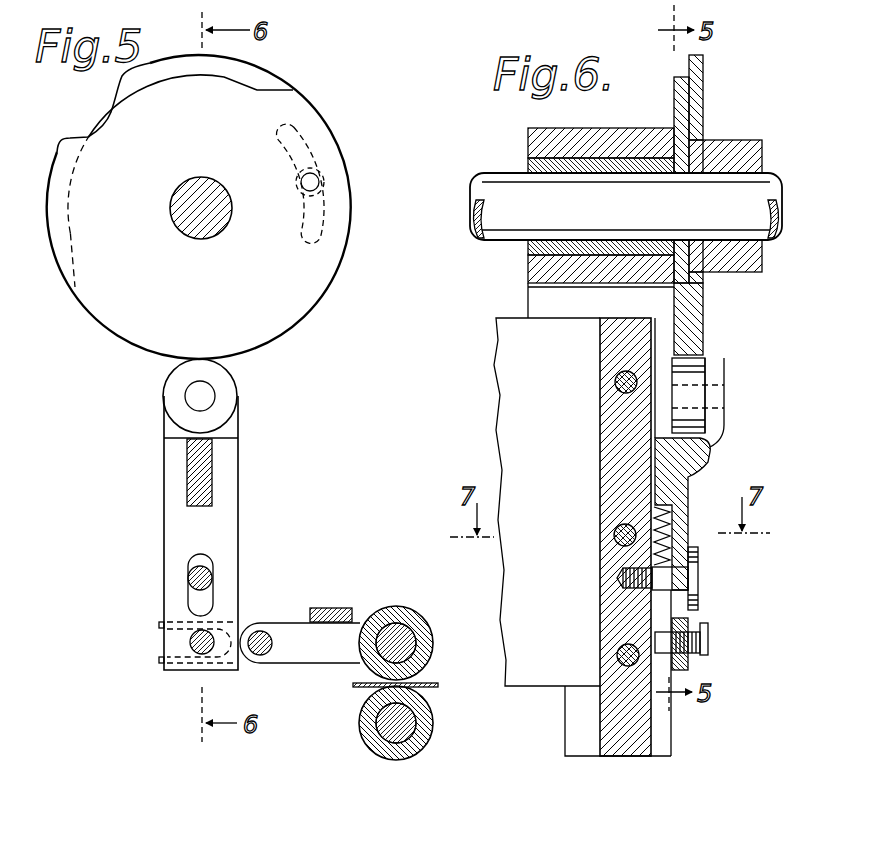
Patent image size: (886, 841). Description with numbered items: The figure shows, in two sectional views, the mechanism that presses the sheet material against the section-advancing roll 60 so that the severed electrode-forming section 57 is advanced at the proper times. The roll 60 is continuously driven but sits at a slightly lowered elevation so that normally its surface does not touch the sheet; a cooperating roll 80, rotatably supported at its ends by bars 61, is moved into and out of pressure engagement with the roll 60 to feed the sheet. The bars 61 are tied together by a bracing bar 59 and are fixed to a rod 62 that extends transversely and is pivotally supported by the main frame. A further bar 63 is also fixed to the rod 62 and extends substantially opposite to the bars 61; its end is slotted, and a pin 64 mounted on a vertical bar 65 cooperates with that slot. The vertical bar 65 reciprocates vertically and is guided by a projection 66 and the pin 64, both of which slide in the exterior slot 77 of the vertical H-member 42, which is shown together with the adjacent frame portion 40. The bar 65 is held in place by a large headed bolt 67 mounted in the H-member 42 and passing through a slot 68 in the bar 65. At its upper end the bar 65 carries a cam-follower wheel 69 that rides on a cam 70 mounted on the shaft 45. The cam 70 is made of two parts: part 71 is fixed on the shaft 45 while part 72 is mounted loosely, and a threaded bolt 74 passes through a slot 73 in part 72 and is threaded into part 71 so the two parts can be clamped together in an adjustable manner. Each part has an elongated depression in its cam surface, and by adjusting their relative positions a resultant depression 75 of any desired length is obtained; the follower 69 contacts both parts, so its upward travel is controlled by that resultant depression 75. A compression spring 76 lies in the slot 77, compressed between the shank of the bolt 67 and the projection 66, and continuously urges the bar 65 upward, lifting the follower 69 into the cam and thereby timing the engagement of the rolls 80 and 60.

In FIG. 6, the frame block 40 is at (503, 400).
In FIG. 6, the vertical H-member 42 is at (626, 748).
In FIG. 6, the shaft 45 is at (497, 185).
In FIG. 5, the electrode-forming section 57 is at (440, 688).
In FIG. 5, the bracing bar 59 is at (348, 609).
In FIG. 5, the section-advancing roll 60 is at (366, 742).
In FIG. 5, the bars 61 is at (298, 622).
In FIG. 5, the rod 62 is at (262, 632).
In FIG. 5, the bar 63 is at (240, 624).
In FIG. 6, the bar 63 is at (688, 665).
In FIG. 5, the pin 64 is at (200, 652).
In FIG. 6, the pin 64 is at (708, 634).
In FIG. 5, the vertical bar 65 is at (238, 523).
In FIG. 6, the vertical bar 65 is at (688, 490).
In FIG. 5, the projection 66 is at (209, 477).
In FIG. 6, the projection 66 is at (655, 458).
In FIG. 5, the large headed bolt 67 is at (188, 576).
In FIG. 6, the large headed bolt 67 is at (699, 598).
In FIG. 5, the slot 68 is at (195, 600).
In FIG. 6, the slot 68 is at (680, 561).
In FIG. 5, the cam-follower wheel 69 is at (238, 383).
In FIG. 6, the cam-follower wheel 69 is at (700, 421).
In FIG. 5, the cam 70 is at (341, 136).
In FIG. 6, the cam 70 is at (707, 312).
In FIG. 5, the cam part 71 is at (224, 77).
In FIG. 6, the cam part 71 is at (673, 95).
In FIG. 5, the cam part 72 is at (272, 75).
In FIG. 6, the cam part 72 is at (703, 95).
In FIG. 5, the slot 73 is at (320, 230).
In FIG. 5, the threaded bolt 74 is at (325, 182).
In FIG. 5, the resultant depression 75 is at (110, 115).
In FIG. 6, the compression spring 76 is at (668, 518).
In FIG. 6, the exterior slot 77 is at (664, 730).
In FIG. 5, the cooperating roll 80 is at (404, 614).